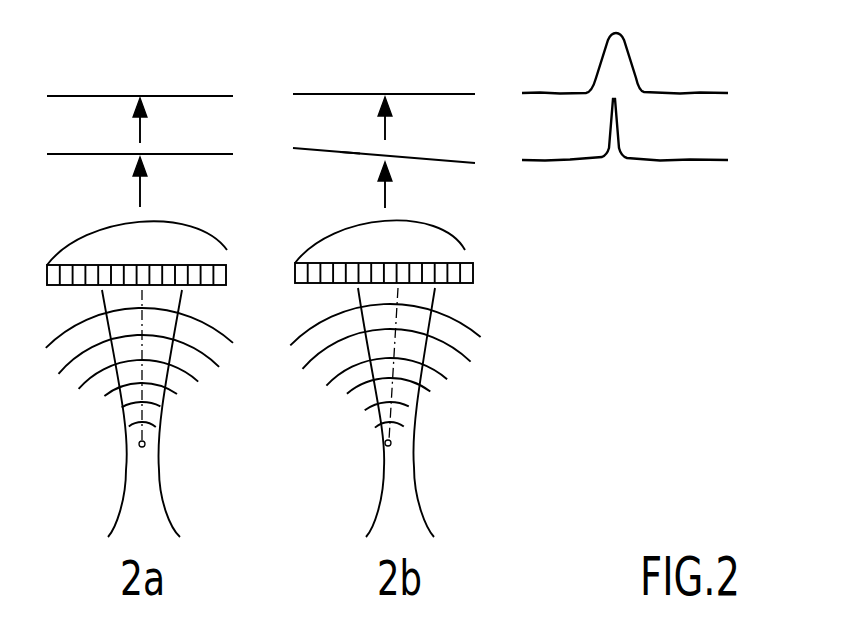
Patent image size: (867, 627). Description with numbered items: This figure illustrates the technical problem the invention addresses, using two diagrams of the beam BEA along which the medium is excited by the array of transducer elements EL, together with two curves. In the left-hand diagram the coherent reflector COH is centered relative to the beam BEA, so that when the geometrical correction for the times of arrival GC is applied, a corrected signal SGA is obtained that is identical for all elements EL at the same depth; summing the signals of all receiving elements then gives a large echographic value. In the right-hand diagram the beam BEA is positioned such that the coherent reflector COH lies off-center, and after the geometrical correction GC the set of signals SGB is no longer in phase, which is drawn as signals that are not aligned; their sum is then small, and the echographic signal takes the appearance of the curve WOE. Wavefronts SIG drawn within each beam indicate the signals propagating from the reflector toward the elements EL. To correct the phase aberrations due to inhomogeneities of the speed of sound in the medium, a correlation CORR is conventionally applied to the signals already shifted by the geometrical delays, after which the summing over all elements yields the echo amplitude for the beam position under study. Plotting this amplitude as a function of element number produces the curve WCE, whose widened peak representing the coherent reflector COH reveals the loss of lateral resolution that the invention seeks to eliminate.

The correlation CORR is at (261, 128).
The geometrical correction for the times of arrival GC is at (263, 182).
The corrected signal SGA is at (181, 158).
The set of signals SGB is at (350, 153).
The elements EL is at (296, 273).
The ultrasound signal wavefronts SIG is at (305, 388).
The coherent reflector COH is at (145, 444).
The beam BEA is at (380, 481).
The curve of the amplitude of the echo with correlation WCE is at (658, 67).
The curve of the echographic signal without correlation WOE is at (658, 135).